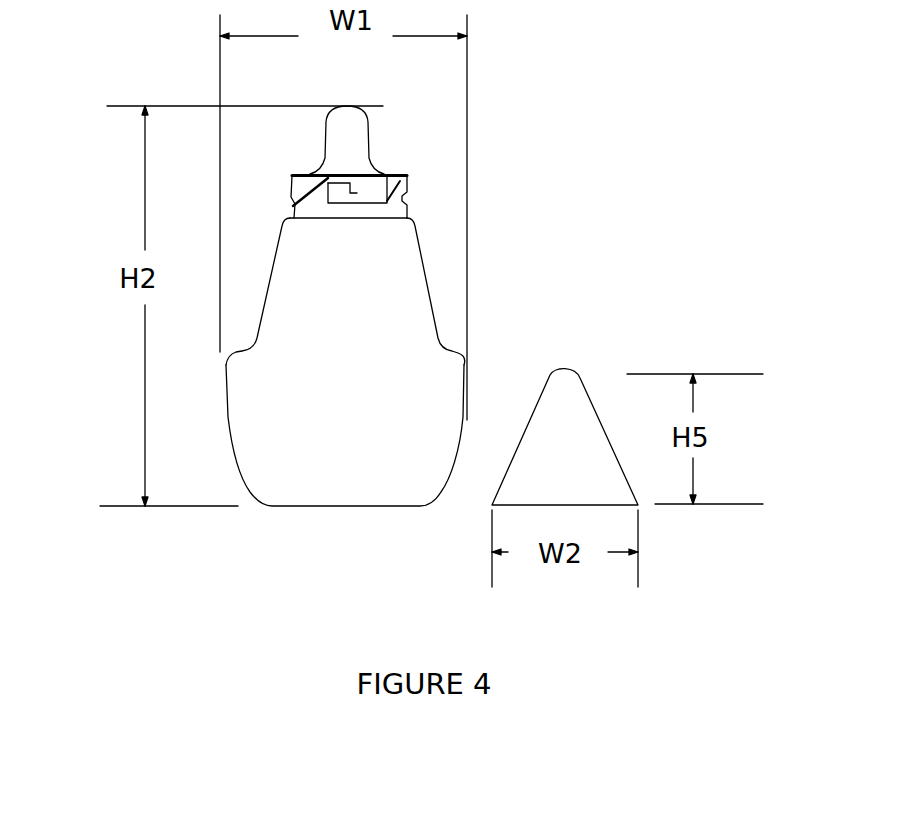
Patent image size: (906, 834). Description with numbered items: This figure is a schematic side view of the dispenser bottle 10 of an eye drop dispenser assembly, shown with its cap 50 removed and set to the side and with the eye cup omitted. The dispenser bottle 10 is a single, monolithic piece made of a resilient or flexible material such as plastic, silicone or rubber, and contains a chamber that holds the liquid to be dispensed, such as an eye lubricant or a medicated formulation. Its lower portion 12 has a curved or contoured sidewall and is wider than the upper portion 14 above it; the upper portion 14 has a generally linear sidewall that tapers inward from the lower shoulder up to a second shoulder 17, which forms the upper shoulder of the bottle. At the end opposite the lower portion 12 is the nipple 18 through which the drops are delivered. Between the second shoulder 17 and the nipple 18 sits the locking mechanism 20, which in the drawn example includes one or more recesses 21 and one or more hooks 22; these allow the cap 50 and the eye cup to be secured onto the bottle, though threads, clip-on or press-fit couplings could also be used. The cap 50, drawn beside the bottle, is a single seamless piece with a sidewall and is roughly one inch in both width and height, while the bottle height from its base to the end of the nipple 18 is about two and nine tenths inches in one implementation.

The dispenser bottle 10 is at (593, 183).
The lower portion 12 is at (422, 374).
The upper portion 14 is at (406, 289).
The second shoulder 17 is at (422, 204).
The nipple 18 is at (315, 136).
The locking mechanism 20 is at (450, 170).
The recess 21 is at (387, 177).
The hook 22 is at (361, 178).
The cap 50 is at (612, 365).